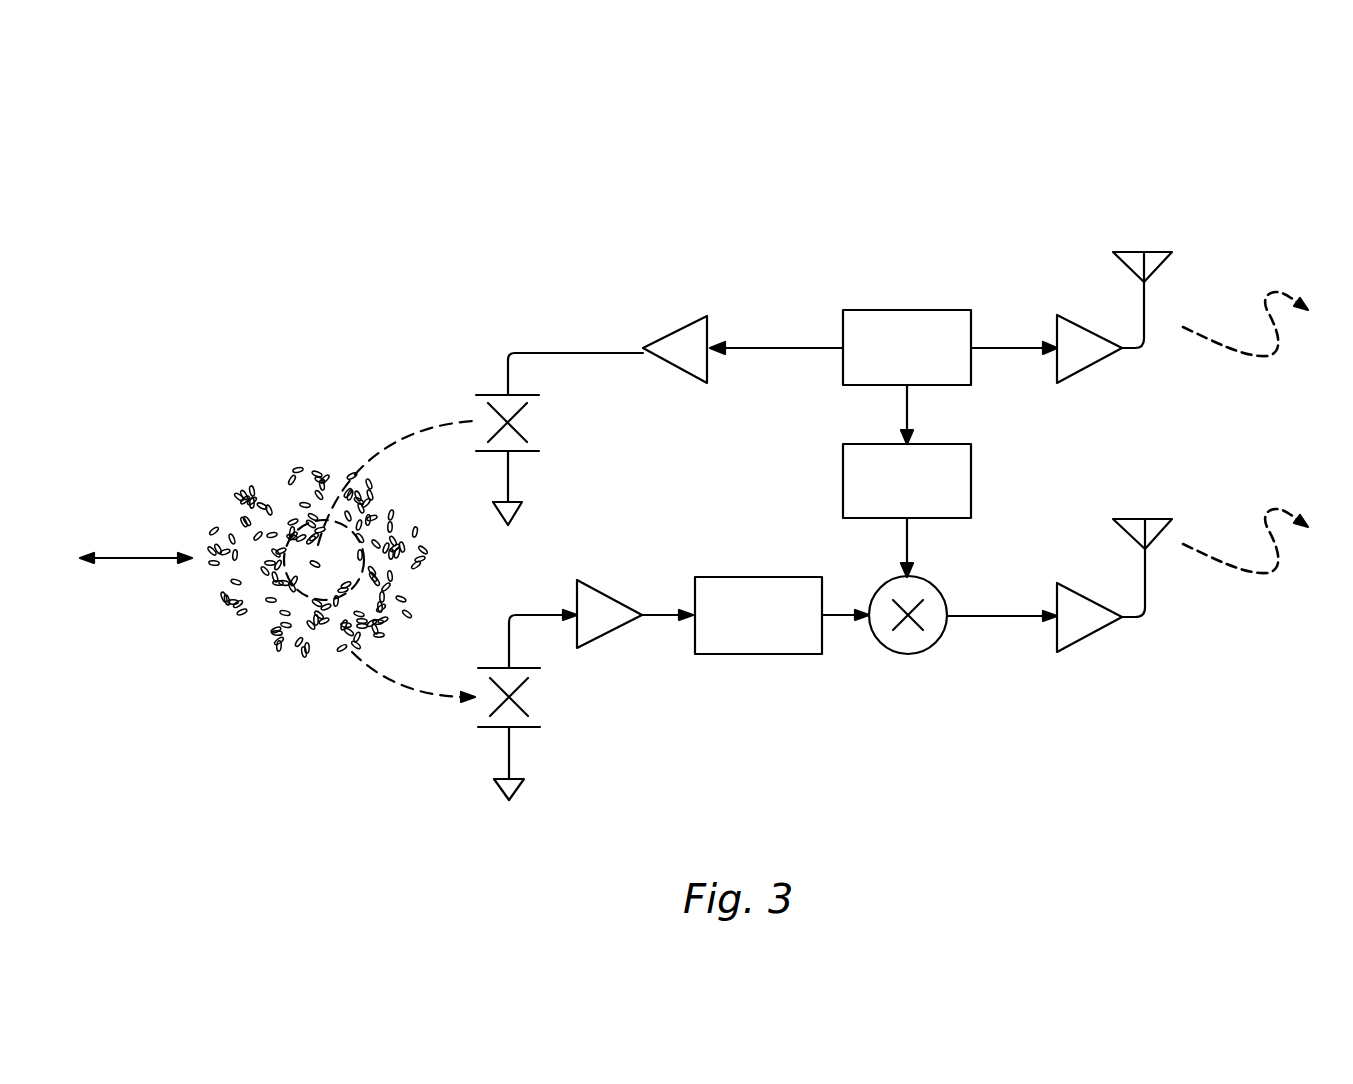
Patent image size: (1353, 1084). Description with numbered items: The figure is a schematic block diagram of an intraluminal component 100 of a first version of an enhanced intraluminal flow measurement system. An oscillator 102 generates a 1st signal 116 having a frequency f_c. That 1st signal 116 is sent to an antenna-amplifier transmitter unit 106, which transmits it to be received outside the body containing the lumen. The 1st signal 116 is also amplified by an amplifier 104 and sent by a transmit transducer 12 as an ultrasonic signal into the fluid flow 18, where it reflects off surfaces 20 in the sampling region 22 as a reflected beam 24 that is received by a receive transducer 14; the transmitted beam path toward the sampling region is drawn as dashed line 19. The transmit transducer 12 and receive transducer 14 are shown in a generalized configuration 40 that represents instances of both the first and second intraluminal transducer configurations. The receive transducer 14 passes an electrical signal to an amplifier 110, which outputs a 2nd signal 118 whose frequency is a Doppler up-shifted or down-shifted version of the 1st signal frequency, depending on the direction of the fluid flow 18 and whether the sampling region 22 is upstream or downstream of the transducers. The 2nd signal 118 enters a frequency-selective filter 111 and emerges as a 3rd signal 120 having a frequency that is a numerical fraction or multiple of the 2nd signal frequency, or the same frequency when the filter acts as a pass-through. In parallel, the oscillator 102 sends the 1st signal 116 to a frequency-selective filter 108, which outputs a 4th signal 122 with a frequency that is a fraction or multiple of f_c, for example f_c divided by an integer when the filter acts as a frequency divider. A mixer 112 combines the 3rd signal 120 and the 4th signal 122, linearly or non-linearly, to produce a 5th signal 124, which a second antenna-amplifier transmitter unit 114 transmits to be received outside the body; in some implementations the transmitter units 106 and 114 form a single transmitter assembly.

The intraluminal component 100 is at (665, 130).
The generalized configuration 40 is at (237, 398).
The fluid flow 18 is at (135, 577).
The surfaces 20 is at (298, 478).
The sampling region 22 is at (340, 588).
The first ultrasonic beam path 19 is at (405, 428).
The reflected beam 24 is at (385, 680).
The transmit transducer 12 is at (530, 422).
The receive transducer 14 is at (530, 697).
The amplifier 104 is at (675, 318).
The oscillator 102 is at (872, 310).
The 1st signal 116 is at (766, 350).
The frequency-selective filter 108 is at (971, 472).
The 4th signal 122 is at (903, 535).
The mixer 112 is at (907, 654).
The 3rd signal 120 is at (835, 617).
The 5th signal 124 is at (996, 617).
The amplifier 110 is at (612, 596).
The 2nd signal 118 is at (653, 612).
The frequency-selective filter 111 is at (724, 577).
The antenna-amplifier transmitter unit 106 is at (1164, 198).
The antenna-amplifier transmitter unit 114 is at (1167, 692).